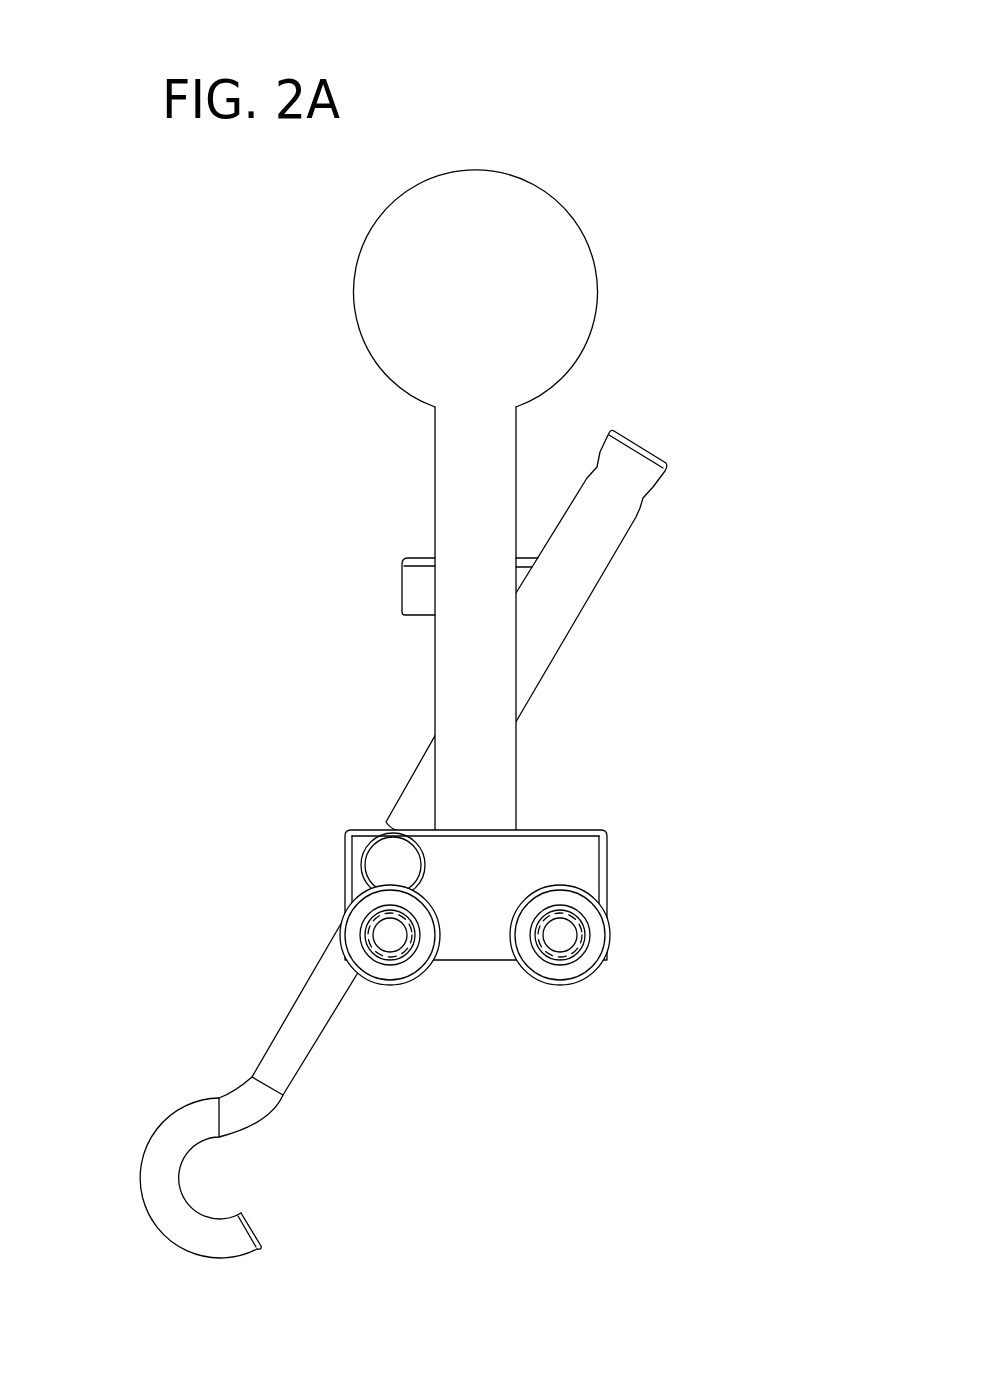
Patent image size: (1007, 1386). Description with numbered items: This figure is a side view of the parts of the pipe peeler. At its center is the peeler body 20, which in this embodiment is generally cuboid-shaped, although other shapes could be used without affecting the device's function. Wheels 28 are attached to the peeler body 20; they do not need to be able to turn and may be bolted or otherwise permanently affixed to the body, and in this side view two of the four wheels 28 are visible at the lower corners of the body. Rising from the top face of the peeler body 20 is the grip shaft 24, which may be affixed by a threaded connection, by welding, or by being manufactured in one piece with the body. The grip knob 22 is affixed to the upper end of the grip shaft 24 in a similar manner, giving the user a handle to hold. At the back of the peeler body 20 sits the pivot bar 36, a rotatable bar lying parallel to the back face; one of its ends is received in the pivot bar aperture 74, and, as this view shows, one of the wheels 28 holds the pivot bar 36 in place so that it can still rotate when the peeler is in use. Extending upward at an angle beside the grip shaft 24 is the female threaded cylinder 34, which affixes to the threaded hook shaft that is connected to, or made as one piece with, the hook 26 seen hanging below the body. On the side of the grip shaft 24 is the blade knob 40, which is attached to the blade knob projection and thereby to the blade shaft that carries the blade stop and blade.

The peeler body 20 is at (607, 858).
The grip knob 22 is at (355, 333).
The grip shaft 24 is at (437, 450).
The hook 26 is at (170, 1117).
The wheels 28 is at (403, 983).
The female threaded cylinder 34 is at (580, 610).
The pivot bar 36 is at (378, 858).
The blade knob 40 is at (403, 580).
The pivot bar aperture 74 is at (363, 883).